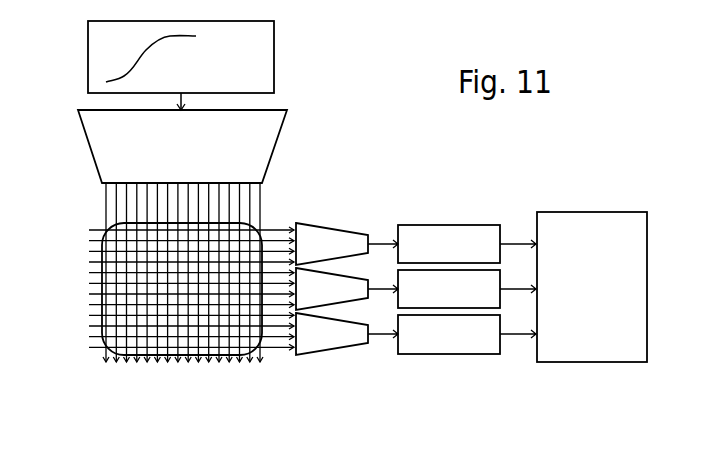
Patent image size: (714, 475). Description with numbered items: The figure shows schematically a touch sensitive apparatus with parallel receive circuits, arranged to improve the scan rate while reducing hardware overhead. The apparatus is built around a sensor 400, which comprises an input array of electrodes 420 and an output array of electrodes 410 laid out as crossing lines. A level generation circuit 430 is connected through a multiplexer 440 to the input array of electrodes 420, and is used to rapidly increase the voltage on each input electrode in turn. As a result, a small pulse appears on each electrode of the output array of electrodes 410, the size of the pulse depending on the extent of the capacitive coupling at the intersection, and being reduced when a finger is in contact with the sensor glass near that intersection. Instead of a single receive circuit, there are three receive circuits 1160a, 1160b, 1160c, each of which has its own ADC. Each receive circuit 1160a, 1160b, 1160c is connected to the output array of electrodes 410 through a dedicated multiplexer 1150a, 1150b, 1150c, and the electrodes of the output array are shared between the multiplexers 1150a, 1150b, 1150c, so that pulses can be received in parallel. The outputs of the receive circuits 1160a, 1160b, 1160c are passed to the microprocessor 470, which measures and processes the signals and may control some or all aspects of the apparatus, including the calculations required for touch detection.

The sensor 400 is at (223, 368).
The output array of electrodes 410 is at (92, 294).
The input array of electrodes 420 is at (262, 212).
The level generation circuit 430 is at (181, 57).
The multiplexer 440 is at (182, 138).
The microprocessor 470 is at (592, 287).
The dedicated multiplexer 1150a is at (347, 244).
The dedicated multiplexer 1150b is at (347, 289).
The dedicated multiplexer 1150c is at (347, 334).
The receive circuit 1160a is at (467, 244).
The receive circuit 1160b is at (467, 289).
The receive circuit 1160c is at (467, 334).